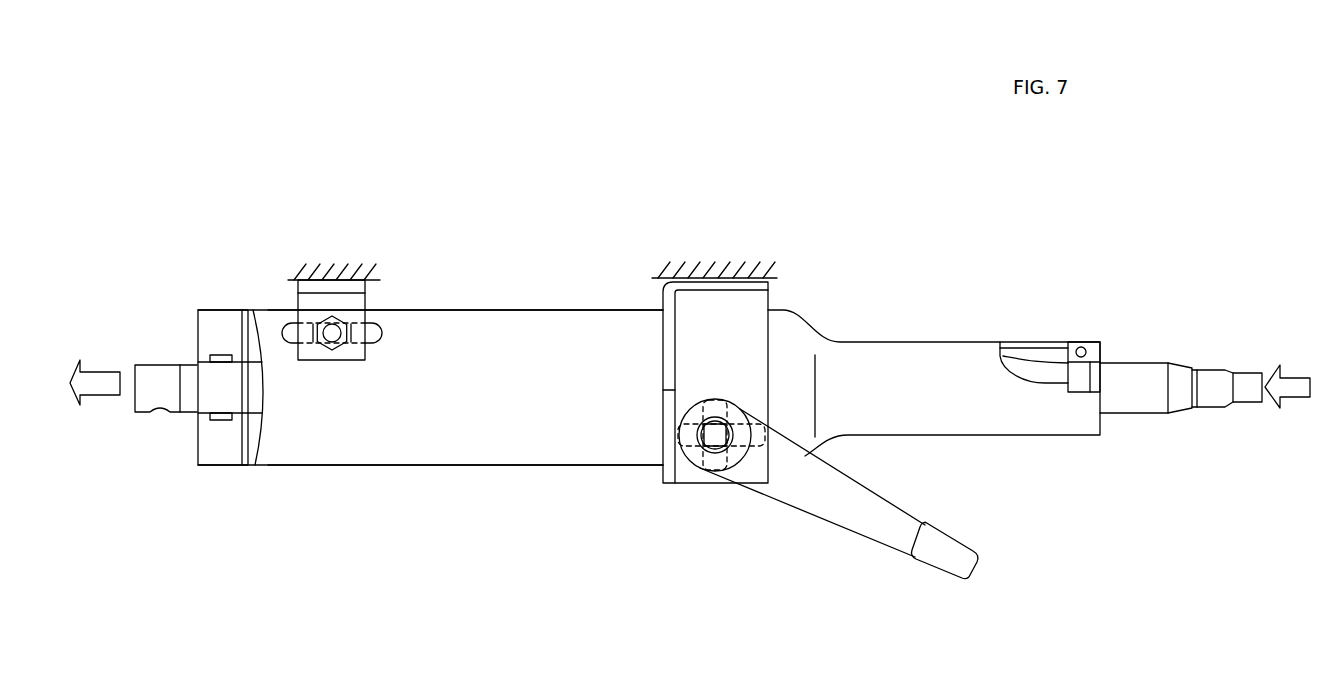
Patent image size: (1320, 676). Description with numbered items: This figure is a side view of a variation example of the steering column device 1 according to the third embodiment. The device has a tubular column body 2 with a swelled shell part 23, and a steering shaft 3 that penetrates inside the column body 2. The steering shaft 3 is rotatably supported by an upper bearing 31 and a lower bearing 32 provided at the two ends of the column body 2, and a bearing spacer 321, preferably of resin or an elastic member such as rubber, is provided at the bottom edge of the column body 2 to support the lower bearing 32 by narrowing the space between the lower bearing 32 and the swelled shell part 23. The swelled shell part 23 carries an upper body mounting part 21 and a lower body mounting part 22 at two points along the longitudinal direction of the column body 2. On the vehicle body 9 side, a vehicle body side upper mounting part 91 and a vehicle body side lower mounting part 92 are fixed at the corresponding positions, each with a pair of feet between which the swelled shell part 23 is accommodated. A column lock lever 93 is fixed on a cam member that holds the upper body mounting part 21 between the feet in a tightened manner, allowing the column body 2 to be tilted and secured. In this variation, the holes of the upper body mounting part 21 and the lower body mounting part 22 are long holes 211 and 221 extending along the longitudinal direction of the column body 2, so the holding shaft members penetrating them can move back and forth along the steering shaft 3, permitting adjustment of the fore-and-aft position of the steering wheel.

The steering column device 1 is at (640, 138).
The column body 2 is at (358, 450).
The steering shaft 3 is at (1143, 398).
The vehicle body 9 is at (330, 270).
The upper body mounting part 21 is at (754, 409).
The long hole 211 is at (752, 445).
The lower body mounting part 22 is at (342, 356).
The long hole 221 is at (290, 325).
The swelled shell part 23 is at (475, 312).
The upper bearing 31 is at (1105, 345).
The lower bearing 32 is at (222, 355).
The bearing spacer 321 is at (222, 320).
The vehicle body side upper mounting part 91 is at (785, 326).
The vehicle body side lower mounting part 92 is at (388, 296).
The column lock lever 93 is at (862, 525).